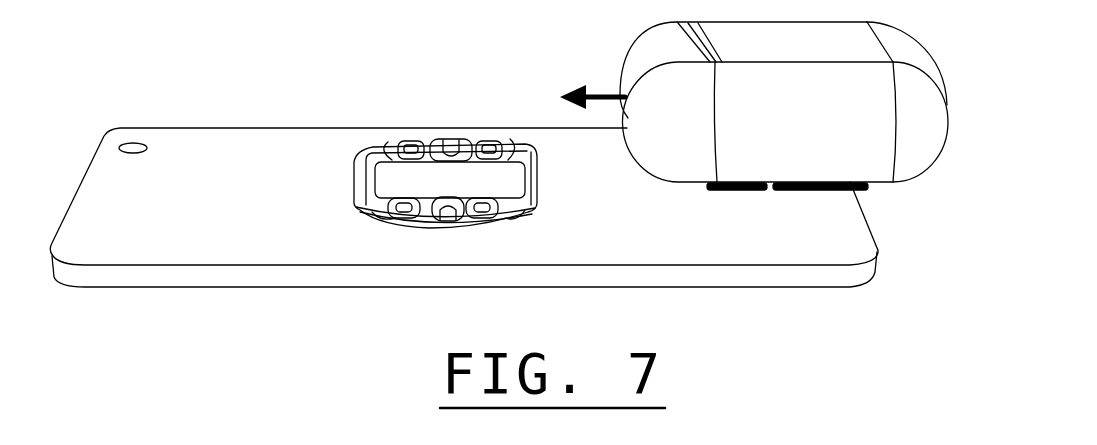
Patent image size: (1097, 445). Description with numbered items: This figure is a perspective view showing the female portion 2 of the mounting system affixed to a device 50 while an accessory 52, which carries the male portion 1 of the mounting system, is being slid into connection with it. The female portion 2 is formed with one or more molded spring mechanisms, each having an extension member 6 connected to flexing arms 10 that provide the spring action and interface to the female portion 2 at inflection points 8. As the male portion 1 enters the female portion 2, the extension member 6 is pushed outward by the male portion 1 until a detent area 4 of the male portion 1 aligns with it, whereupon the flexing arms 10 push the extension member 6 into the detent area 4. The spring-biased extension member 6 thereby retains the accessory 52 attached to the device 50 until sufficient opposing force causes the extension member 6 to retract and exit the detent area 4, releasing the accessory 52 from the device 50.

The male portion 1 is at (713, 186).
The female portion 2 is at (525, 190).
The detent area 4 is at (787, 188).
The extension member 6 is at (450, 143).
The inflection points 8 is at (388, 142).
The flexing arms 10 is at (425, 138).
The device 50 is at (648, 238).
The accessory 52 is at (814, 137).